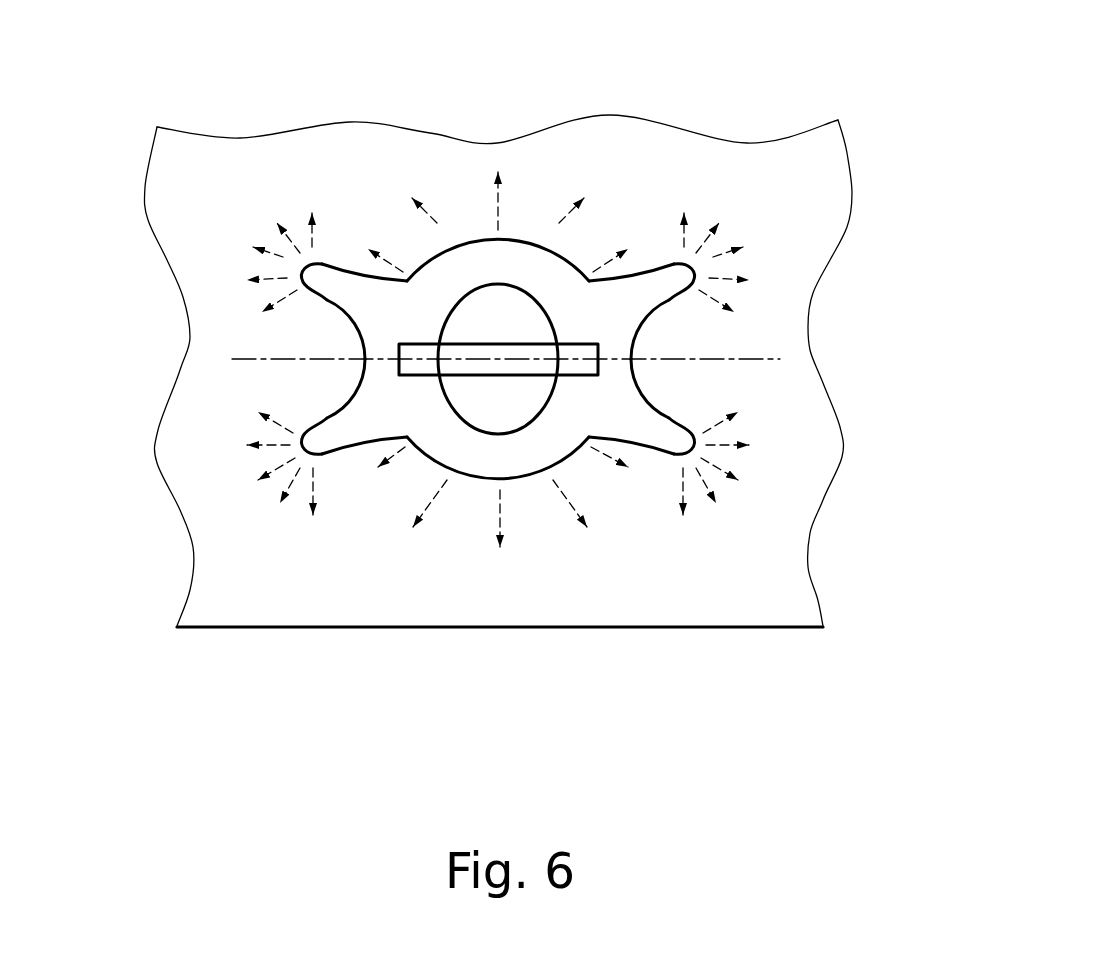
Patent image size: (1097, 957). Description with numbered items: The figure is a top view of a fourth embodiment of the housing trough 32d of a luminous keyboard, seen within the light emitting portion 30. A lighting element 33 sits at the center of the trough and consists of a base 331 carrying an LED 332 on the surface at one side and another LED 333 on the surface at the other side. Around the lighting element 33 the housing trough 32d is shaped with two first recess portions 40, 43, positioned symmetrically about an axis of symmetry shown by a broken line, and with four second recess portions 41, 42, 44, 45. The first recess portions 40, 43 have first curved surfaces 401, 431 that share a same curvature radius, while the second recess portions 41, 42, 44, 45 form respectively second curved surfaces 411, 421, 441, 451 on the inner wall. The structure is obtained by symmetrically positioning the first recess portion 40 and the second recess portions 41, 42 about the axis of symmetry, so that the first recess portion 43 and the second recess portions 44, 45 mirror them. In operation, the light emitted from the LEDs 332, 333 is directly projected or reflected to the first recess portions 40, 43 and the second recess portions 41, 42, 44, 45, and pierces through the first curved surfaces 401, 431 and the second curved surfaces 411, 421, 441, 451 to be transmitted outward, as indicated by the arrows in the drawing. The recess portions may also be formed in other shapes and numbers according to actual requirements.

The light emitting portion 30 is at (467, 418).
The housing trough 32d is at (400, 260).
The lighting element 33 is at (598, 224).
The base 331 is at (587, 350).
The LED 332 is at (513, 297).
The LED 333 is at (518, 397).
The first recess portion 40 is at (504, 371).
The first curved surface 401 is at (515, 237).
The second recess portion 41 is at (247, 247).
The second curved surface 411 is at (299, 275).
The second recess portion 42 is at (754, 243).
The second curved surface 421 is at (697, 274).
The first recess portion 43 is at (498, 554).
The first curved surface 431 is at (528, 480).
The second recess portion 44 is at (247, 478).
The second curved surface 441 is at (299, 449).
The second recess portion 45 is at (754, 474).
The second curved surface 451 is at (698, 444).